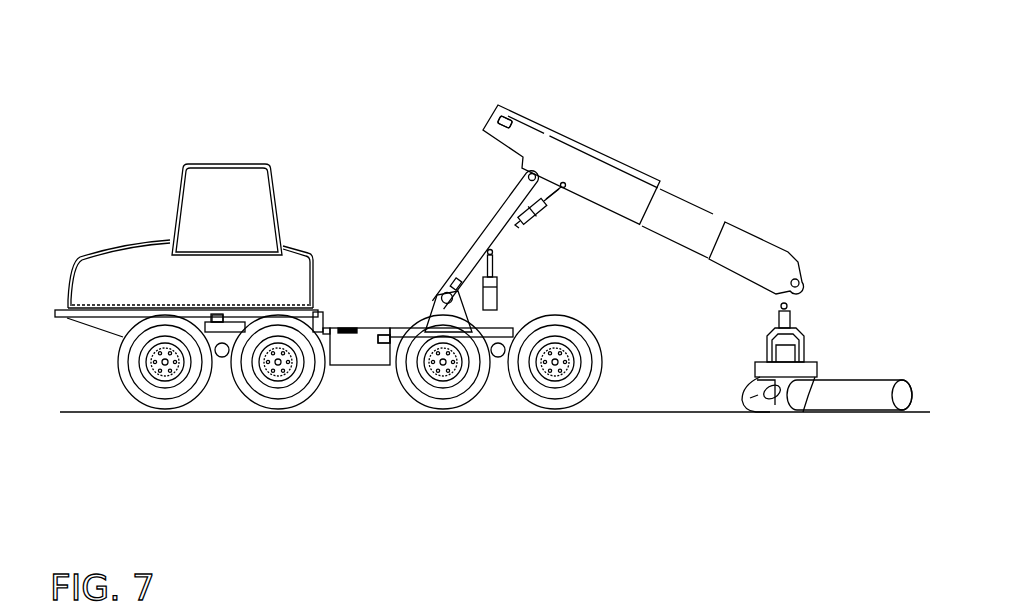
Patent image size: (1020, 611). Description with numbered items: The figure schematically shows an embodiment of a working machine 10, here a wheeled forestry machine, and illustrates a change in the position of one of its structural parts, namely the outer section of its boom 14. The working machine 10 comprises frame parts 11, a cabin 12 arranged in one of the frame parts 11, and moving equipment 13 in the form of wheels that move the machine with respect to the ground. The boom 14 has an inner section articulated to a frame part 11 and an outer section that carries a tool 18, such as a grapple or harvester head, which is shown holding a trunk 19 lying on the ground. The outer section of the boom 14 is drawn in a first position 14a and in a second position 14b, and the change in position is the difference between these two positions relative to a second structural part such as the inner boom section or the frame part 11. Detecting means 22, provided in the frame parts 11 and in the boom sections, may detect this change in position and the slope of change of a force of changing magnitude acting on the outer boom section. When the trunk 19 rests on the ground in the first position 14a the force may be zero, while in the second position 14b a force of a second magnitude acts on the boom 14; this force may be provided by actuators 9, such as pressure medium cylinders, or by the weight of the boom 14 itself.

The working machine 10 is at (473, 274).
The frame part 11 is at (97, 320).
The cabin 12 is at (197, 195).
The moving equipment 13 is at (260, 388).
The boom 14 is at (652, 210).
The first position of the outer section of the boom 14a is at (757, 272).
The second position of the outer section of the boom 14b is at (768, 247).
The tool 18 is at (817, 373).
The trunk 19 is at (860, 390).
The detecting means 22 is at (212, 316).
The actuator 9 is at (537, 212).